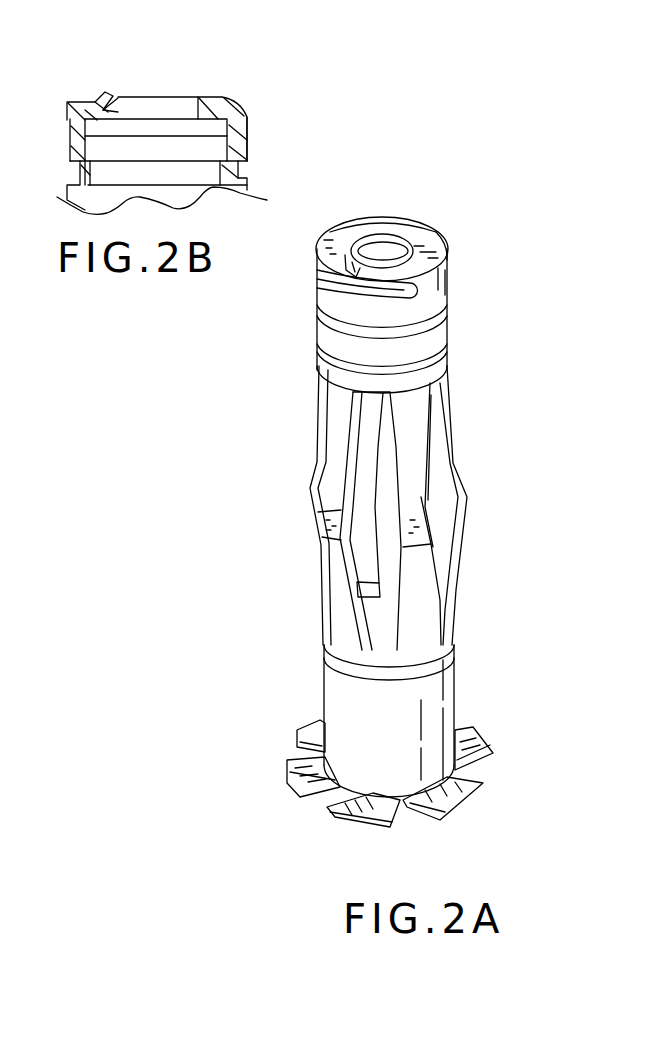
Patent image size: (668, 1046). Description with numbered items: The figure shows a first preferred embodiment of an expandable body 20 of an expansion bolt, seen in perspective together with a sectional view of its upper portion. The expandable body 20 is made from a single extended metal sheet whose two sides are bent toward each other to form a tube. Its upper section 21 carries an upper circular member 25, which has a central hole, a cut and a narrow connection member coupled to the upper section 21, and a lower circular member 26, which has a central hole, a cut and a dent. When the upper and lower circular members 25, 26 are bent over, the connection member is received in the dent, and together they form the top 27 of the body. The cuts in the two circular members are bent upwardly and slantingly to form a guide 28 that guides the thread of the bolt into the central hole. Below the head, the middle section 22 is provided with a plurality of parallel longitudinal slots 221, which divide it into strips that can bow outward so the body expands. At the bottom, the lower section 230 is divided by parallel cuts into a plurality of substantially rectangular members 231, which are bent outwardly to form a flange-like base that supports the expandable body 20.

In FIG. 2A, the expandable body 20 is at (473, 307).
In FIG. 2A, the upper section 21 is at (457, 340).
In FIG. 2A, the middle section 22 is at (472, 503).
In FIG. 2A, the longitudinal slots 221 is at (445, 535).
In FIG. 2B, the upper circular member 25 is at (220, 106).
In FIG. 2A, the upper circular member 25 is at (387, 223).
In FIG. 2A, the lower circular member 26 is at (322, 290).
In FIG. 2B, the top 27 is at (257, 131).
In FIG. 2A, the top 27 is at (448, 235).
In FIG. 2B, the guide 28 is at (118, 101).
In FIG. 2A, the guide 28 is at (352, 260).
In FIG. 2A, the lower cup 230 is at (467, 698).
In FIG. 2A, the rectangular members 231 is at (483, 773).